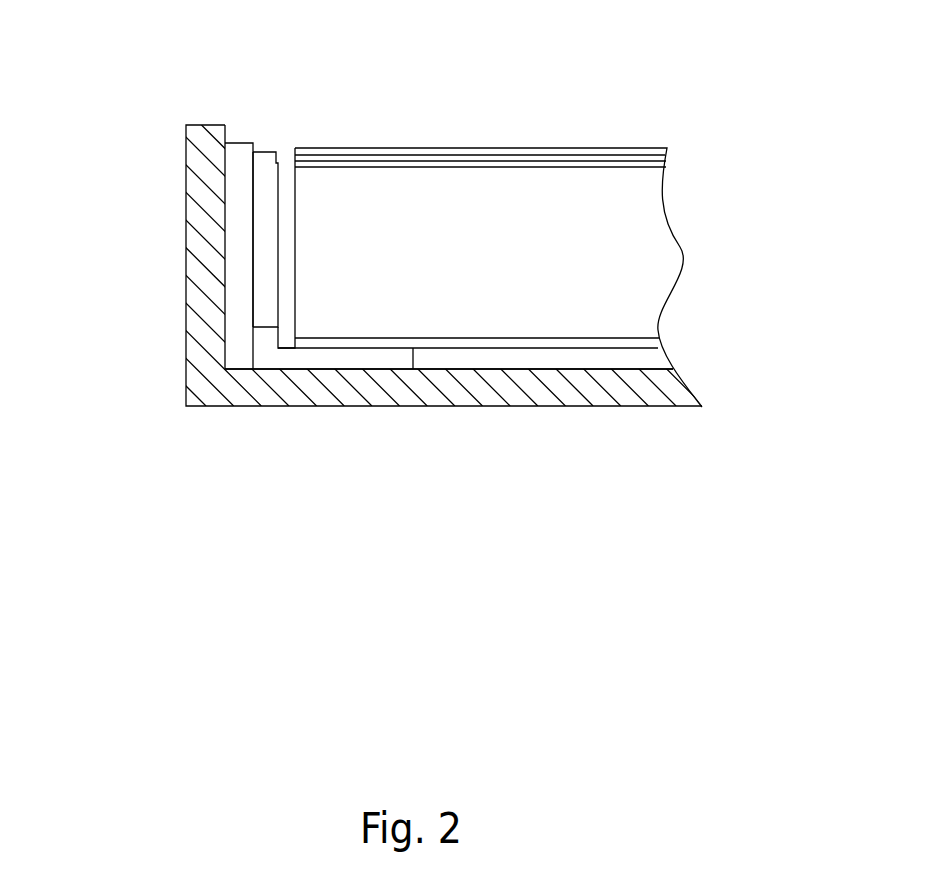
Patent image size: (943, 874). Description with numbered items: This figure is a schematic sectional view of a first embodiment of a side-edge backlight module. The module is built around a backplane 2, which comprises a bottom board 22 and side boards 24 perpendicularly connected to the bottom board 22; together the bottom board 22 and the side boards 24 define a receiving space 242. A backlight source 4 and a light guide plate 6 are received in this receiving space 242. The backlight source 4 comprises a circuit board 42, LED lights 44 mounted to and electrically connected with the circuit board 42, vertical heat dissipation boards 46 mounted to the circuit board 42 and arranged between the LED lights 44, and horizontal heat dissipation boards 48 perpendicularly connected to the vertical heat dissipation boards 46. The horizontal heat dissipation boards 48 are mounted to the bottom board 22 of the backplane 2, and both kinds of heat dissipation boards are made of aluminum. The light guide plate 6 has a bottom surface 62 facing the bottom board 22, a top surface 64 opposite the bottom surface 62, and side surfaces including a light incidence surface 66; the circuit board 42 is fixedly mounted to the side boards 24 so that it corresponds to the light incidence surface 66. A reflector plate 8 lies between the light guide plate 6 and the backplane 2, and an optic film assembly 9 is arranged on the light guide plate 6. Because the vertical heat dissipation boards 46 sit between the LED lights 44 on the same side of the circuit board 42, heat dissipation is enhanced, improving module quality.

The backplane 2 is at (404, 345).
The bottom board 22 is at (380, 387).
The side board 24 is at (203, 291).
The receiving space 242 is at (582, 362).
The backlight source 4 is at (233, 262).
The circuit board 42 is at (237, 157).
The light-emitting diode (LED) light 44 is at (262, 263).
The vertical heat dissipation board 46 is at (262, 150).
The horizontal heat dissipation board 48 is at (315, 372).
The light guide plate 6 is at (530, 295).
The bottom surface 62 is at (478, 338).
The top surface 64 is at (447, 165).
The light incidence surface 66 is at (290, 195).
The reflector plate 8 is at (653, 343).
The optic film assembly 9 is at (577, 157).